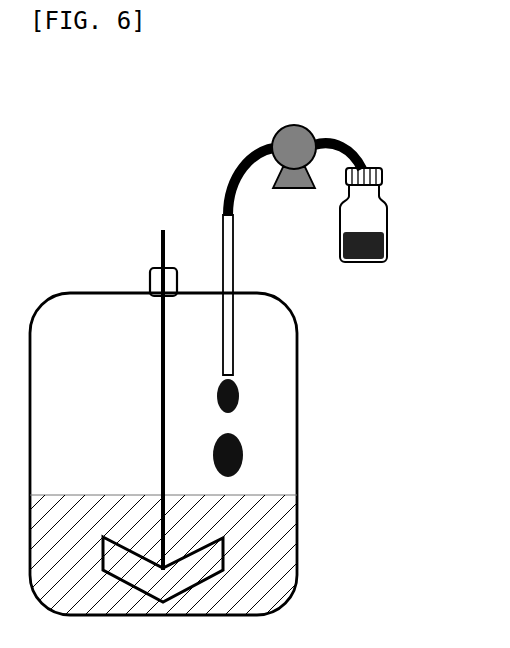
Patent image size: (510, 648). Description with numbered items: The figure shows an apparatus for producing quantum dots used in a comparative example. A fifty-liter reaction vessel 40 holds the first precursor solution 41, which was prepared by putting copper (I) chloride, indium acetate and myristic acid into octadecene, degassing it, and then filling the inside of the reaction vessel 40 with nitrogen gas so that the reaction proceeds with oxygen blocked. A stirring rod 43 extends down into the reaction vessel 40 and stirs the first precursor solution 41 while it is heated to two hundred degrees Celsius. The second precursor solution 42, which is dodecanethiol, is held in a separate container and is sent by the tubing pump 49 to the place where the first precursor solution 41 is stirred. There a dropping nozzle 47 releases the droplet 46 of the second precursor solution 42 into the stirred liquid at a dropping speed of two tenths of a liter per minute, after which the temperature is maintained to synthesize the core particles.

The reaction vessel 40 is at (297, 398).
The first precursor solution 41 is at (277, 570).
The second precursor solution 42 is at (362, 262).
The stirring rod 43 is at (162, 264).
The droplet 46 is at (238, 468).
The dropping nozzle 47 is at (227, 255).
The tubing pump 49 is at (292, 143).